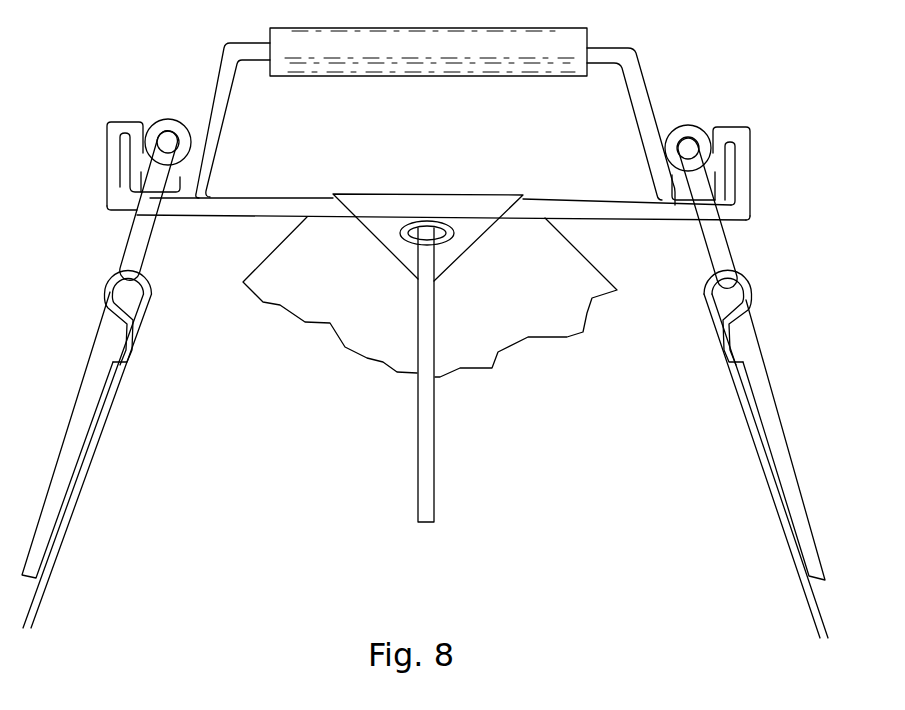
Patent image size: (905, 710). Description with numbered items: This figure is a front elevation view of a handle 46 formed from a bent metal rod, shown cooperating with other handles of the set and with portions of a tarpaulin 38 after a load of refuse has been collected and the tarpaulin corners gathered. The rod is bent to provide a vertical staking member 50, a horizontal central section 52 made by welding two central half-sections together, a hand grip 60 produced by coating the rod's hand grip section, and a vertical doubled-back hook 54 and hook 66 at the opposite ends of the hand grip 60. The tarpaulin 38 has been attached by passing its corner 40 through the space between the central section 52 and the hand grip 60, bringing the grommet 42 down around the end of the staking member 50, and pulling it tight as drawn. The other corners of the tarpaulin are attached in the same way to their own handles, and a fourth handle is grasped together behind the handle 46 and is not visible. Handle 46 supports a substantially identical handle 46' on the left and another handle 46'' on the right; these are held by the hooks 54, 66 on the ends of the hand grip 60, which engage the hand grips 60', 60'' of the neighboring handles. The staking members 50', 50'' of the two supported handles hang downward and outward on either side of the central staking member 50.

The tarpaulin 38 is at (548, 319).
The corner 40 is at (473, 245).
The grommet 42 is at (408, 223).
The handle 46 is at (467, 108).
The handle 46' is at (101, 378).
The handle 46'' is at (759, 387).
The vertical staking member 50 is at (459, 375).
The vertical staking member 50' is at (67, 435).
The vertical staking member 50'' is at (803, 440).
The central section 52 is at (574, 198).
The hook 54 is at (106, 172).
The hand grip 60 is at (428, 78).
The hand grip 60' is at (167, 118).
The hand grip 60'' is at (699, 123).
The hook 66 is at (753, 171).